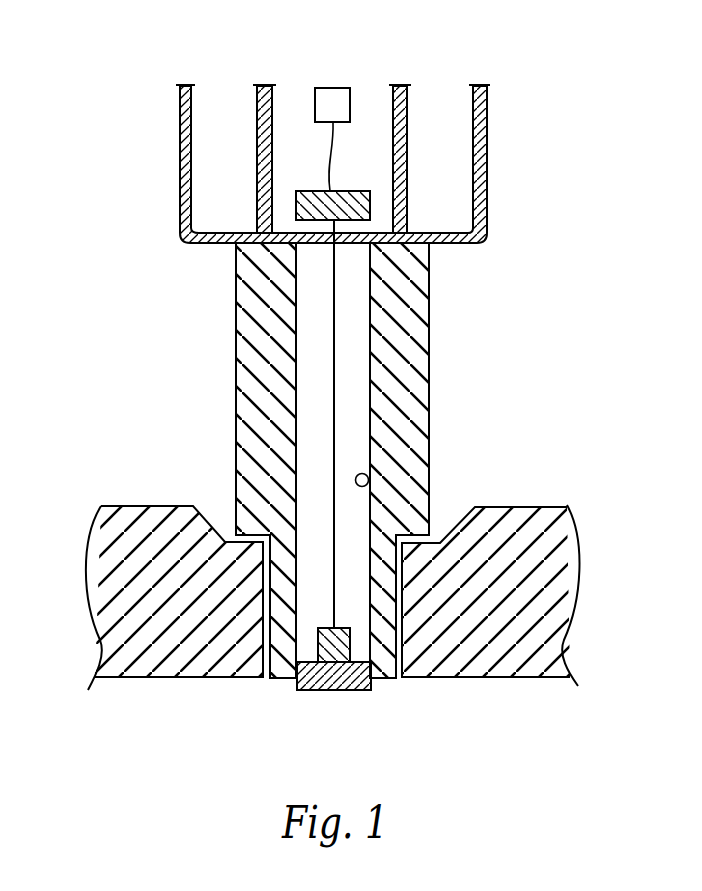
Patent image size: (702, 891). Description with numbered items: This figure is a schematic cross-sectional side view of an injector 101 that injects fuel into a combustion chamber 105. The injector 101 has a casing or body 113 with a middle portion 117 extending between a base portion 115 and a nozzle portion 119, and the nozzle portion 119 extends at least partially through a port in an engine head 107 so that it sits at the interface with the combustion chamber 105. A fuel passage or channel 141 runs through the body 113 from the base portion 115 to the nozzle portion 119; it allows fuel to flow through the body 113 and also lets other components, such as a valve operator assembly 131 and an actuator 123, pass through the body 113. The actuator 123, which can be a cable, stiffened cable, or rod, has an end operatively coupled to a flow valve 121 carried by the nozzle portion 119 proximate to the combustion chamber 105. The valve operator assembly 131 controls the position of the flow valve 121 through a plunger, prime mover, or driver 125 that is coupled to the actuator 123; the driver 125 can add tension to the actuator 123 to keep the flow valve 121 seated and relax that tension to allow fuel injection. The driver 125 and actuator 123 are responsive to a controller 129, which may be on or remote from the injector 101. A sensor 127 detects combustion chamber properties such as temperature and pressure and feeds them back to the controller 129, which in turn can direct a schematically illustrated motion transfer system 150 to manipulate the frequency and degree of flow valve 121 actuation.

The injector 101 is at (120, 186).
The combustion chamber 105 is at (186, 738).
The engine head 107 is at (548, 520).
The body 113 is at (246, 375).
The base portion 115 is at (487, 155).
The middle portion 117 is at (408, 405).
The nozzle portion 119 is at (390, 664).
The flow valve 121 is at (355, 675).
The actuator 123 is at (335, 348).
The driver 125 is at (326, 191).
The sensor 127 is at (307, 692).
The controller 129 is at (318, 88).
The valve operator assembly 131 is at (370, 84).
The channel 141 is at (368, 480).
The motion transfer system 150 is at (300, 676).